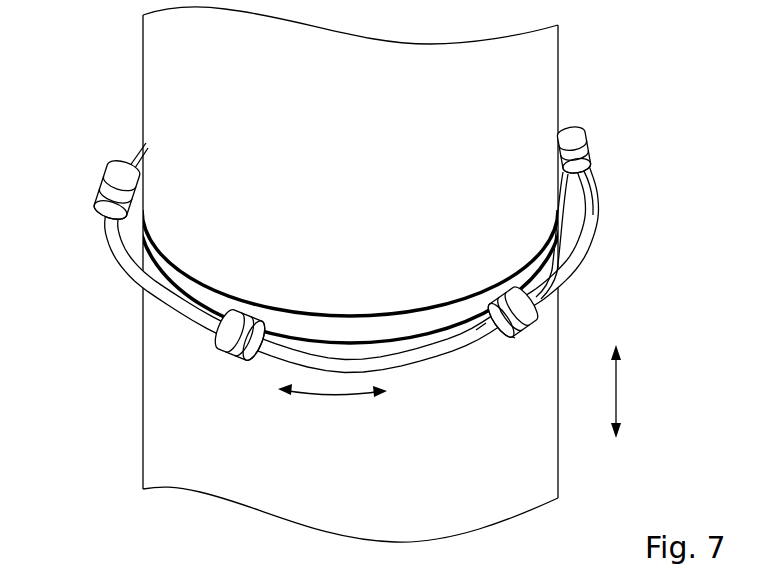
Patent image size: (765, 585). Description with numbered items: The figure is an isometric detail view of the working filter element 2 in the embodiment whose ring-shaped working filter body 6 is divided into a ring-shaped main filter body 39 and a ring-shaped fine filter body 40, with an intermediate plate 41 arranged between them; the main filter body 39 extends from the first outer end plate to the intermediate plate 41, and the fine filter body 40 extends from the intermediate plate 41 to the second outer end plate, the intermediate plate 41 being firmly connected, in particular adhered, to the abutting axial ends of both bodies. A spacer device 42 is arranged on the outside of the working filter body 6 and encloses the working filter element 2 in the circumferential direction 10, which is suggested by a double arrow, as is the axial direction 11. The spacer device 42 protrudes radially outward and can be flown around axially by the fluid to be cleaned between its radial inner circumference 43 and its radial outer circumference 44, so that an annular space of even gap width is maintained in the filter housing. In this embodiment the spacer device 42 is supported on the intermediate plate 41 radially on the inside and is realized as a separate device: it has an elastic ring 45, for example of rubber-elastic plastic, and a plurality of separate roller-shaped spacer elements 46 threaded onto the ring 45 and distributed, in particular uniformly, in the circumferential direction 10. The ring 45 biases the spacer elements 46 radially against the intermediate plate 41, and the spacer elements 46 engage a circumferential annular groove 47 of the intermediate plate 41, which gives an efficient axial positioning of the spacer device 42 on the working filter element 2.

The working filter element 2 is at (570, 75).
The working filter body 6 is at (332, 155).
The fine filter body 40 is at (350, 81).
The main filter body 39 is at (350, 511).
The intermediate plate 41 is at (348, 305).
The spacer device 42 is at (612, 209).
The elastic ring 45 is at (592, 247).
The circumferential annular groove 47 is at (554, 270).
The radial inner circumference 43 is at (487, 300).
The radial outer circumference 44 is at (514, 342).
The spacer elements 46 is at (100, 170).
The circumferential direction 10 is at (332, 397).
The axial direction 11 is at (616, 392).